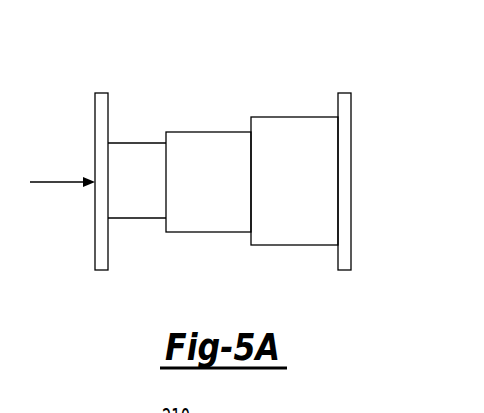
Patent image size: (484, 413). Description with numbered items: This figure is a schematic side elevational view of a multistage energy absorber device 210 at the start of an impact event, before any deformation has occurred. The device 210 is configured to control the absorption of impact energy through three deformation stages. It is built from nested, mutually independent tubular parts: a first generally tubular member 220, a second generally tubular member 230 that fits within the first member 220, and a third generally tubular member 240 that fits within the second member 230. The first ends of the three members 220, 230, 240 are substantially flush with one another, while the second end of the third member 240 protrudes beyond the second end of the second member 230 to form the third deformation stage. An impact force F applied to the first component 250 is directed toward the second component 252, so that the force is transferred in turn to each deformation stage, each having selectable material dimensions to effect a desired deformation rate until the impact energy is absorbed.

The multistage energy absorber device 210 is at (228, 38).
The first generally tubular member 220 is at (302, 106).
The second generally tubular member 230 is at (216, 120).
The third generally tubular member 240 is at (131, 133).
The first component 250 is at (95, 248).
The second component 252 is at (351, 182).